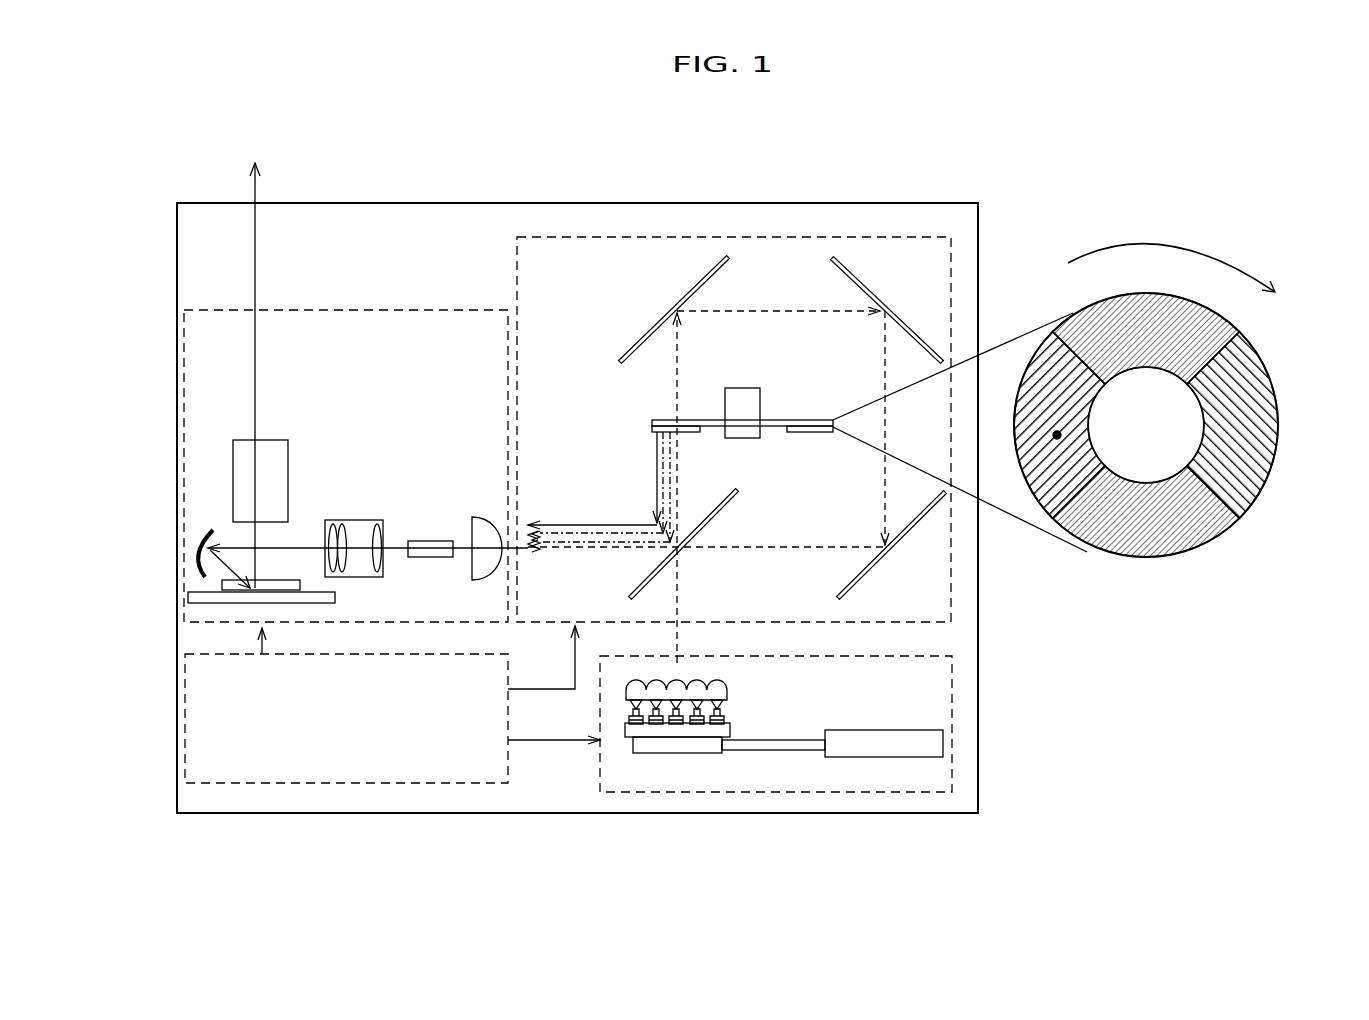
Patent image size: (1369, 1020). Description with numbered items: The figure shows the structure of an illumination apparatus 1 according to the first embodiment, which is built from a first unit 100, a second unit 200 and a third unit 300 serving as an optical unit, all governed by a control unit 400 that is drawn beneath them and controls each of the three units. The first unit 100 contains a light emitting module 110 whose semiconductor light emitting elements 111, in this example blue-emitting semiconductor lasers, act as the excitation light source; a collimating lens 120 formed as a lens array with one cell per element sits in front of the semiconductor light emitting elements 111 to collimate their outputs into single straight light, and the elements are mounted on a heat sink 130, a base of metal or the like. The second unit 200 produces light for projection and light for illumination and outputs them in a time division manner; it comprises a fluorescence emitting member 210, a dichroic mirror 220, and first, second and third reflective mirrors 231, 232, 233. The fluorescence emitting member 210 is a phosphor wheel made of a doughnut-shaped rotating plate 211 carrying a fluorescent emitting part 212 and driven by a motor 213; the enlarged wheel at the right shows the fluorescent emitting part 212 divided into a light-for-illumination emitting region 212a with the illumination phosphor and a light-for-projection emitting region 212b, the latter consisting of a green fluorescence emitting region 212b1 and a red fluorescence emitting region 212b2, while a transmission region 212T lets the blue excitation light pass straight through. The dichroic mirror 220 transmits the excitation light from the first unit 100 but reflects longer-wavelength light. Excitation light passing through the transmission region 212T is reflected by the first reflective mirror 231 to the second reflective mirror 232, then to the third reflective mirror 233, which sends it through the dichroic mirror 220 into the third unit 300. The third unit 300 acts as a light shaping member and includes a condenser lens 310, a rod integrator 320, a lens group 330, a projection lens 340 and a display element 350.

The illumination apparatus 1 is at (895, 203).
The first unit 100 is at (952, 730).
The light emitting module 110 is at (732, 698).
The semiconductor light emitting elements 111 is at (742, 702).
The collimating lens 120 is at (718, 688).
The heat sink 130 is at (630, 736).
The second unit 200 is at (952, 255).
The fluorescence emitting member 210 is at (704, 414).
The rotating plate 211 is at (780, 420).
The fluorescent emitting part 212 is at (660, 432).
The light-for-illumination emitting region 212a is at (1140, 545).
The light-for-projection emitting region 212b is at (1170, 253).
The green fluorescence emitting region 212b1 is at (1060, 320).
The red fluorescence emitting region 212b2 is at (1241, 257).
The transmission region 212T is at (1250, 493).
The motor 213 is at (745, 388).
The dichroic mirror 220 is at (632, 590).
The first reflective mirror 231 is at (644, 324).
The second reflective mirror 232 is at (862, 297).
The third reflective mirror 233 is at (866, 578).
The third unit 300 is at (184, 397).
The condenser lens 310 is at (476, 517).
The rod integrator 320 is at (432, 541).
The lens group 330 is at (353, 520).
The projection lens 340 is at (278, 440).
The display element 350 is at (205, 578).
The control unit 400 is at (185, 718).